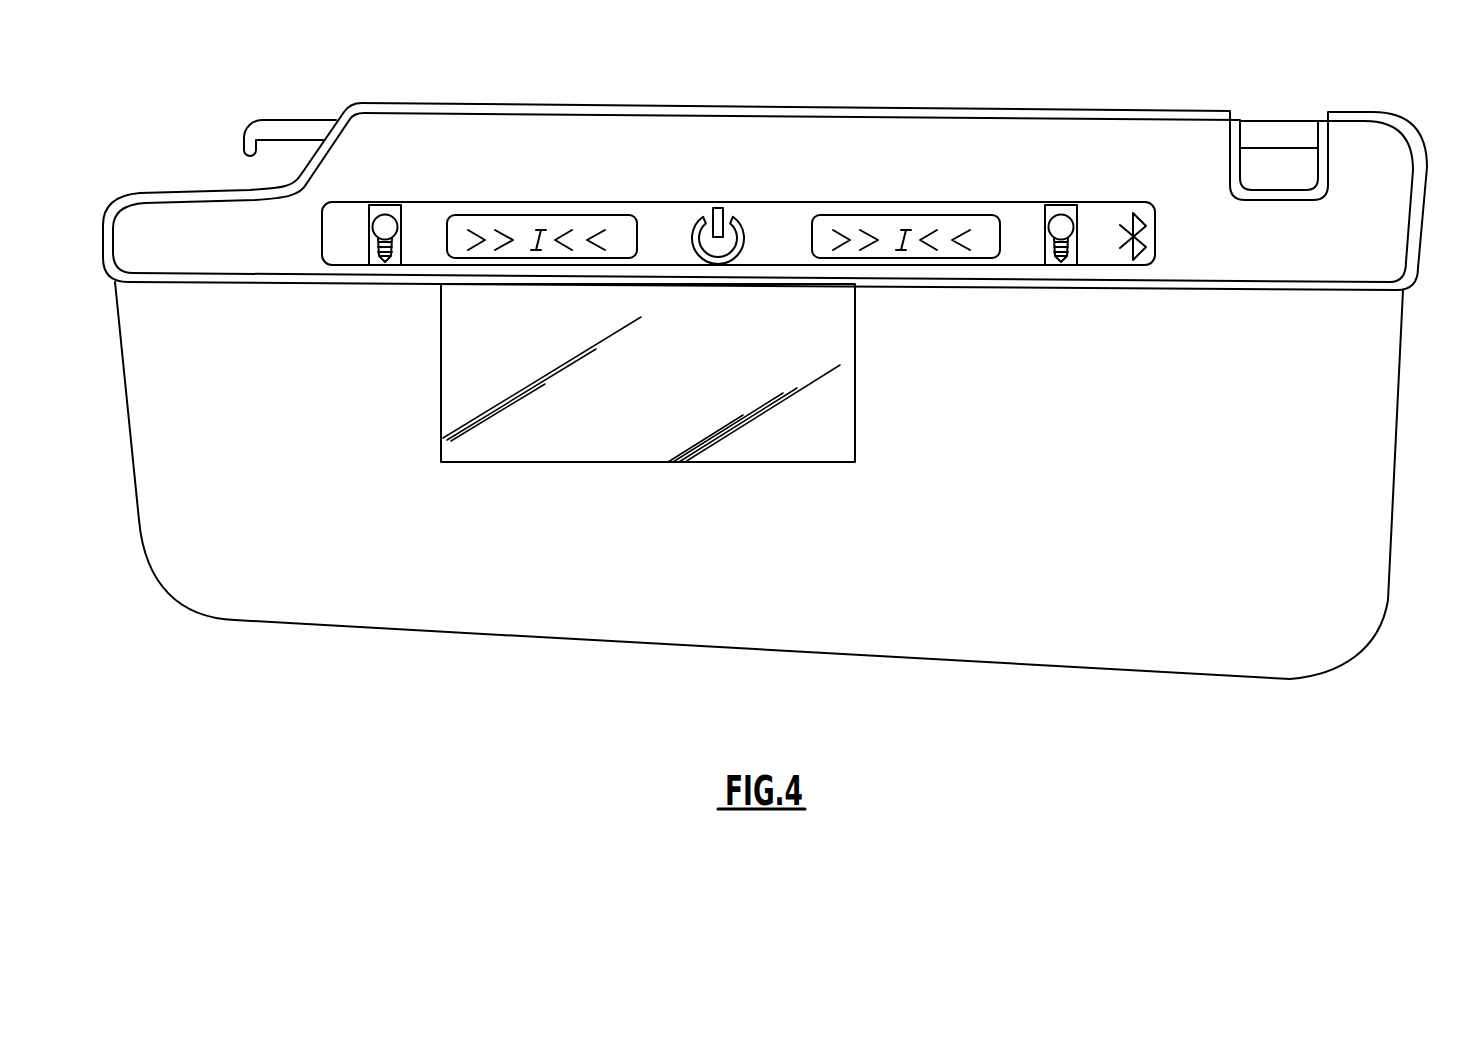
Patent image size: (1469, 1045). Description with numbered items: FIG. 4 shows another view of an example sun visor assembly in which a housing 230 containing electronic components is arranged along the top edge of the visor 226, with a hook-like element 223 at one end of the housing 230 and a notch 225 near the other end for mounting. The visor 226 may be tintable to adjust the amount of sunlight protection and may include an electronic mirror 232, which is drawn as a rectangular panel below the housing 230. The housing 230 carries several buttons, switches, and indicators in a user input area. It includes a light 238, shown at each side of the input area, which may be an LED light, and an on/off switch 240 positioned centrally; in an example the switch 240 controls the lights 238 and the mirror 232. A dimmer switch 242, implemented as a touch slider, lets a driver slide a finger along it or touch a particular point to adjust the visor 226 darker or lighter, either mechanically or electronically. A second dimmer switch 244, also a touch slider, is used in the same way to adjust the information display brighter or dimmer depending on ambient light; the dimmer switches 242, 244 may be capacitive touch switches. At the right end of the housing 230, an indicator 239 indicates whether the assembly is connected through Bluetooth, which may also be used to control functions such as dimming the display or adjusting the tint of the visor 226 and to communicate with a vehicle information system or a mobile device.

The clip hook 223 is at (293, 128).
The mounting notch 225 is at (1273, 130).
The visor 226 is at (1350, 457).
The housing 230 is at (493, 128).
The electronic mirror 232 is at (765, 447).
The light 238 is at (380, 258).
The indicator 239 is at (1138, 252).
The on/off switch 240 is at (703, 212).
The dimmer switch 242 is at (585, 228).
The dimmer switch 244 is at (948, 228).